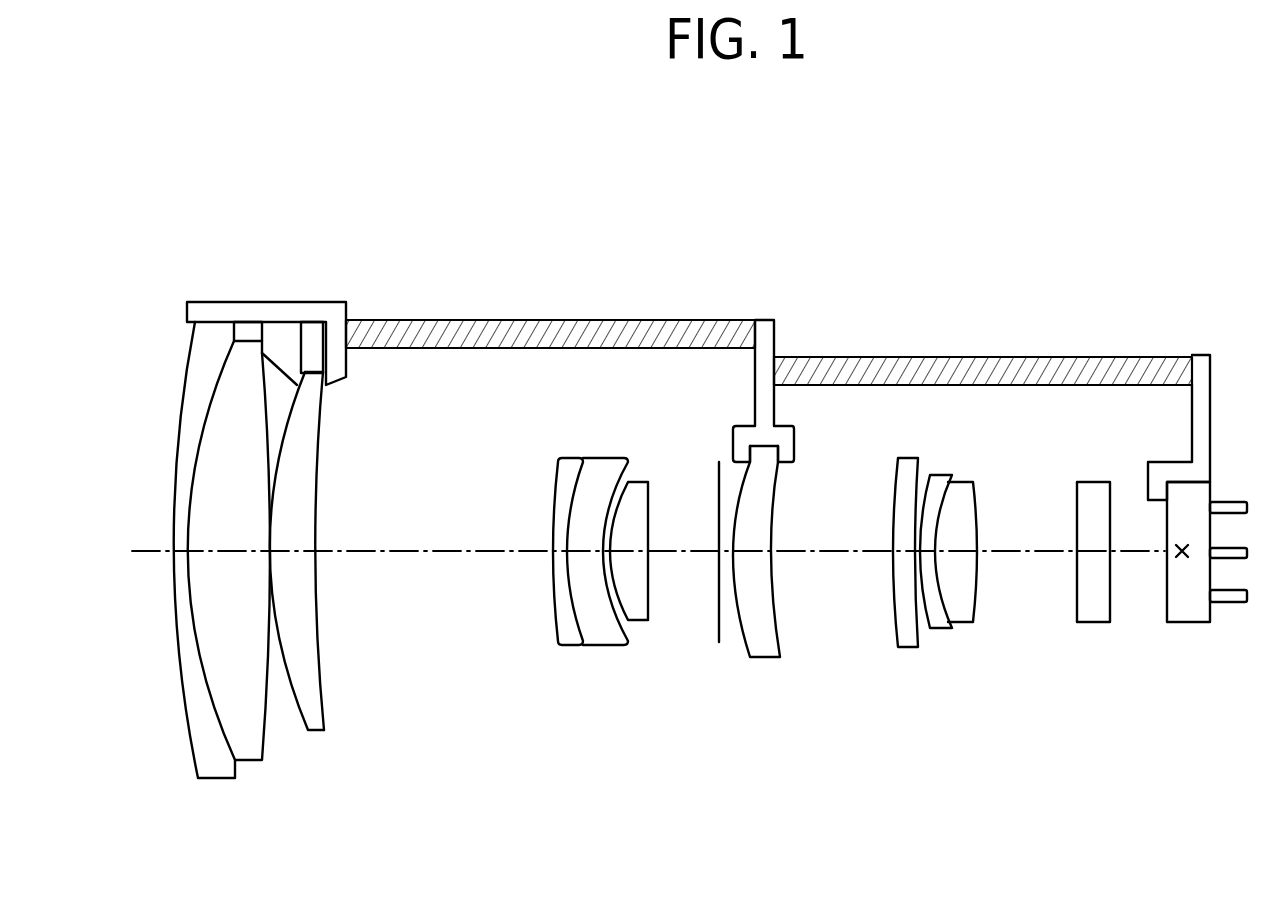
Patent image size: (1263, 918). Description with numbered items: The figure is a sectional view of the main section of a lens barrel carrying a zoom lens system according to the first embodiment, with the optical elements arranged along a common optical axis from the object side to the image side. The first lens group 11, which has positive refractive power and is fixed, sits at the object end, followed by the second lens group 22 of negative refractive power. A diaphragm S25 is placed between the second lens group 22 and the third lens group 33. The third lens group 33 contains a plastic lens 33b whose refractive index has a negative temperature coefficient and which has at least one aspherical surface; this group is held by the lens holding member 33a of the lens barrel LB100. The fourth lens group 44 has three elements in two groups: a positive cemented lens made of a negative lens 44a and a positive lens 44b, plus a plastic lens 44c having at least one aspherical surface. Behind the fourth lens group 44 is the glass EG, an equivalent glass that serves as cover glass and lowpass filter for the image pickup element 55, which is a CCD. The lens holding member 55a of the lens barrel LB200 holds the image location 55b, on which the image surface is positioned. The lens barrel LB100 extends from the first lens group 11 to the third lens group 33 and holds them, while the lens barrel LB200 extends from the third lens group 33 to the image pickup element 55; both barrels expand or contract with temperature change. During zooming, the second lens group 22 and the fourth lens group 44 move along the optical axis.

The first lens group 11 is at (330, 798).
The second lens group 22 is at (648, 758).
The diaphragm S25 is at (719, 625).
The third lens group 33 is at (763, 530).
The lens holding member 33a is at (763, 330).
The plastic lens 33b is at (767, 645).
The fourth lens group 44 is at (942, 641).
The negative lens 44a is at (938, 628).
The positive lens 44b is at (963, 615).
The plastic lens 44c is at (903, 647).
The image pickup element 55 is at (1193, 529).
The lens holding member 55a is at (1200, 365).
The image location 55b is at (1193, 612).
The glass EG is at (1093, 612).
The lens barrel LB100 is at (470, 330).
The lens barrel LB200 is at (933, 362).